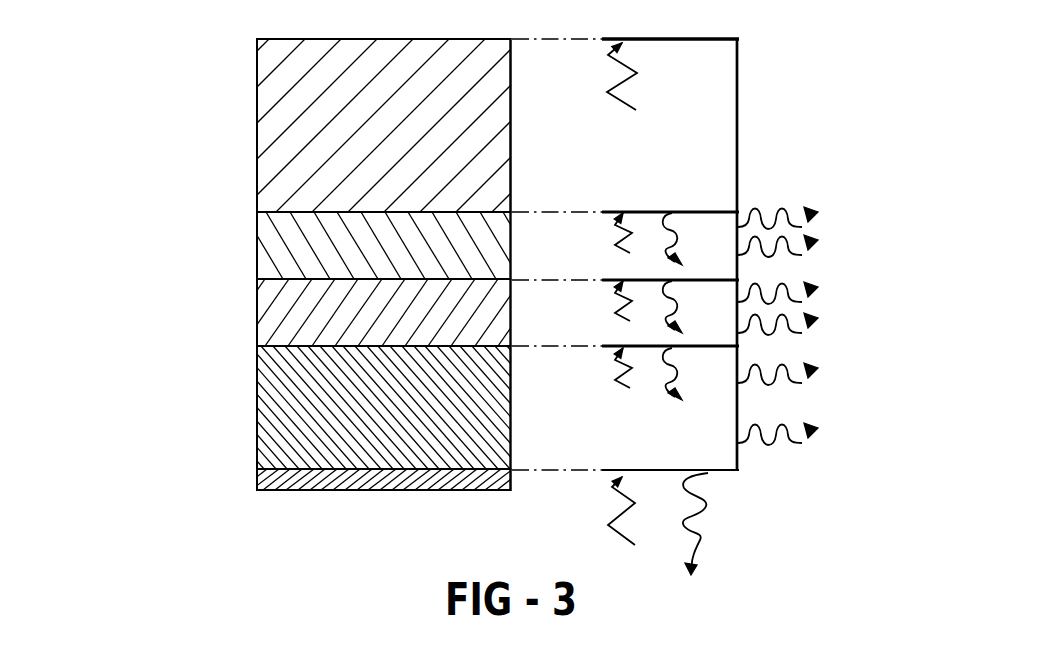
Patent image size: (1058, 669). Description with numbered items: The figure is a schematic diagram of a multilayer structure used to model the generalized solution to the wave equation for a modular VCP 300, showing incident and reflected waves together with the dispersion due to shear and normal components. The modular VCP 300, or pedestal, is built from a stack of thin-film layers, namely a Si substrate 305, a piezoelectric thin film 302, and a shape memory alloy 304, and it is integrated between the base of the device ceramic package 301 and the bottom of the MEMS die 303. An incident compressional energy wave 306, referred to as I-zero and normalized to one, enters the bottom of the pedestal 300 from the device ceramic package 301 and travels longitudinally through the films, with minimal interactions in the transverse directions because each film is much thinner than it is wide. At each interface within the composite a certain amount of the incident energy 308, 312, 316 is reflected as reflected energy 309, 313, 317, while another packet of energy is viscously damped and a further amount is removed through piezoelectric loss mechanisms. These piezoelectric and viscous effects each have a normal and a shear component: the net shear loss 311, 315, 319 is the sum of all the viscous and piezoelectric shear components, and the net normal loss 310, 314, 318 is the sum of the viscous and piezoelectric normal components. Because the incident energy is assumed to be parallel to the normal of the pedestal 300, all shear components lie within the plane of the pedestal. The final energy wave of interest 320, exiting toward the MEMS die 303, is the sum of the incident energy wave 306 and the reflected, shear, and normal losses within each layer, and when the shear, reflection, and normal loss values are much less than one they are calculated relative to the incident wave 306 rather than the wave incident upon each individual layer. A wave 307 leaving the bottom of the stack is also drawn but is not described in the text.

The modular VCP 300 is at (250, 212).
The device ceramic package 301 is at (232, 479).
The piezoelectric thin film 302 is at (232, 308).
The MEMS die 303 is at (232, 124).
The shape memory alloy 304 is at (232, 244).
The Si substrate 305 is at (232, 401).
The incident compressional energy wave 306 is at (608, 525).
The transmitted wave 307 is at (700, 540).
The incident energy 308 is at (624, 380).
The reflected energy 309 is at (693, 379).
The net normal loss 310 is at (817, 444).
The net shear loss 311 is at (817, 384).
The incident energy 312 is at (624, 314).
The reflected energy 313 is at (692, 307).
The net normal loss 314 is at (817, 331).
The net shear loss 315 is at (817, 299).
The incident energy 316 is at (624, 246).
The reflected energy 317 is at (692, 239).
The net normal loss 318 is at (817, 253).
The net shear loss 319 is at (817, 225).
The final energy wave 320 is at (622, 90).